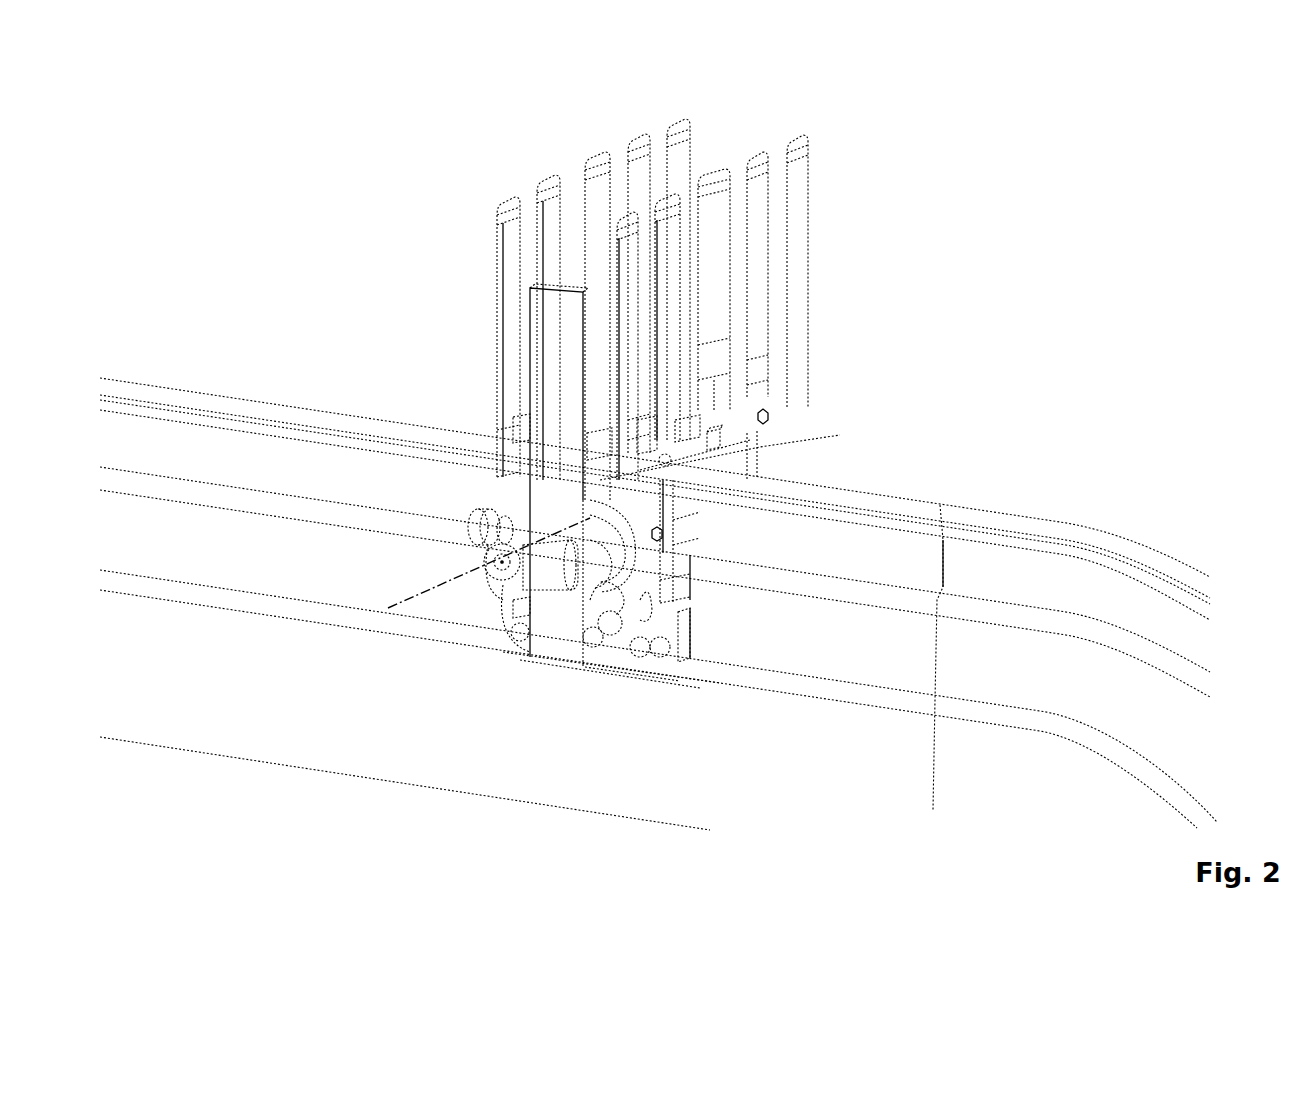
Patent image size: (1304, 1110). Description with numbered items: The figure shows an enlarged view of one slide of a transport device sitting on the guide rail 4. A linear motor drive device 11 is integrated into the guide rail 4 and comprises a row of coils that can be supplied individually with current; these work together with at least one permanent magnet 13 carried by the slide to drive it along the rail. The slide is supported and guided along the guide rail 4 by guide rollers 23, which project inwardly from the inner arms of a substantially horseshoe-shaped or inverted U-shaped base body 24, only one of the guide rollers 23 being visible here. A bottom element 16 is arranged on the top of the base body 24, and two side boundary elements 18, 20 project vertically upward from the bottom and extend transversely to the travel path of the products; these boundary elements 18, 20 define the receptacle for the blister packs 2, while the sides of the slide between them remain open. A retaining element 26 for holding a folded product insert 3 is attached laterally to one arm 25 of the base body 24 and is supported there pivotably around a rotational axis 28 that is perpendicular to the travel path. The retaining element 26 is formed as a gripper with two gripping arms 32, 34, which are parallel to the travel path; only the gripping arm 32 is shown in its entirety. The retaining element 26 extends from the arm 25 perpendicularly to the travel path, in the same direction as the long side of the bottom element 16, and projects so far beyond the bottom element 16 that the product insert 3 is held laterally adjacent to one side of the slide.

The blister pack 2 is at (645, 380).
The folded product insert 3 is at (555, 320).
The guide rail 4 is at (943, 512).
The linear motor drive device 11 is at (815, 640).
The permanent magnet 13 is at (690, 625).
The bottom element 16 is at (775, 385).
The side boundary element 18 is at (508, 235).
The side boundary element 20 is at (798, 185).
The guide roller 23 is at (687, 520).
The base body 24 is at (713, 460).
The arm 25 is at (678, 572).
The retaining element 26 is at (508, 533).
The rotational axis 28 is at (408, 600).
The gripping arm 32 is at (547, 573).
The gripping arm 34 is at (588, 560).